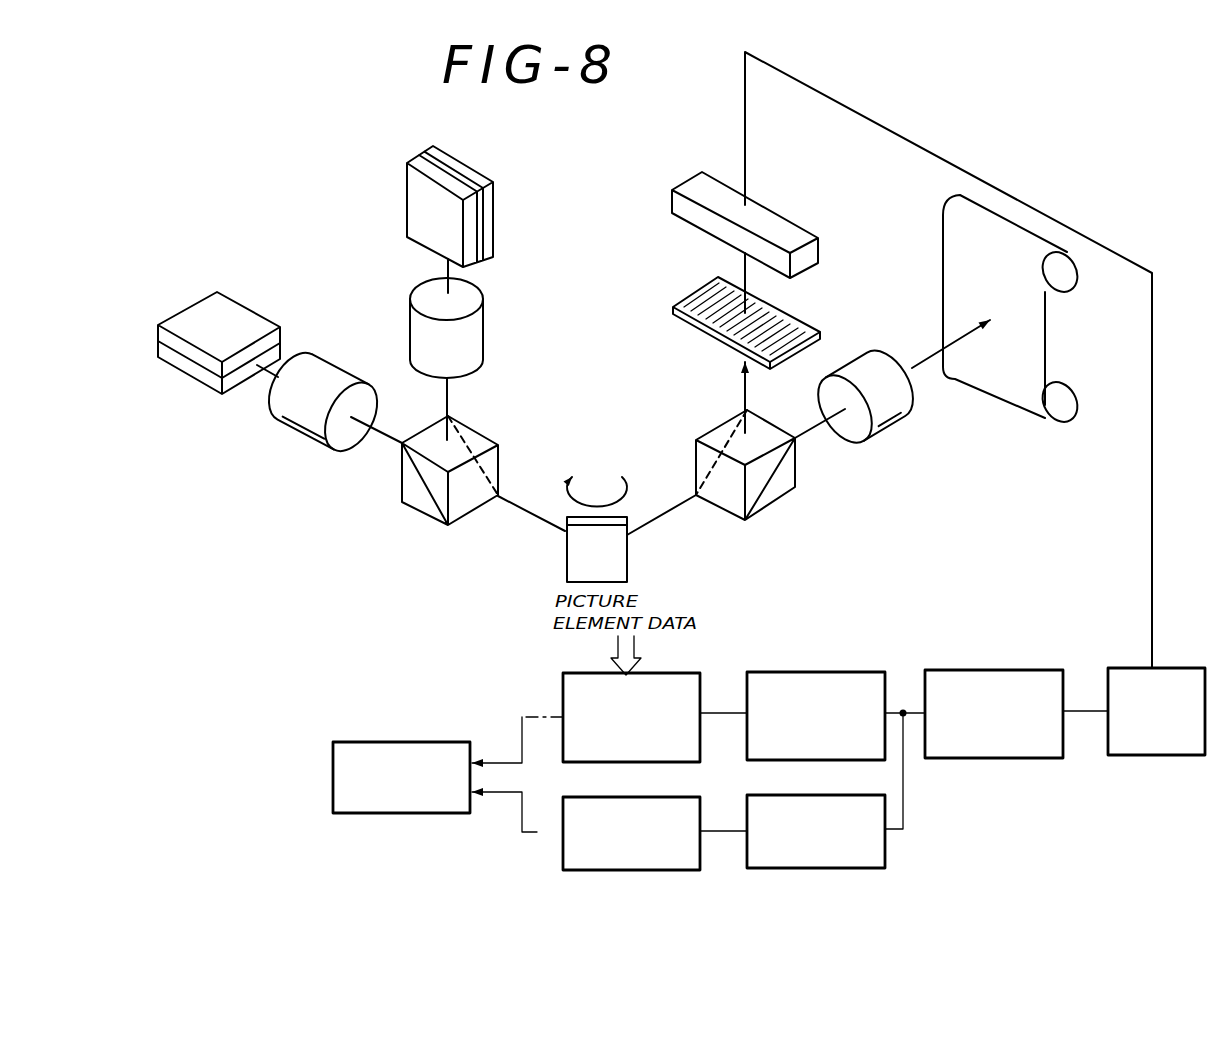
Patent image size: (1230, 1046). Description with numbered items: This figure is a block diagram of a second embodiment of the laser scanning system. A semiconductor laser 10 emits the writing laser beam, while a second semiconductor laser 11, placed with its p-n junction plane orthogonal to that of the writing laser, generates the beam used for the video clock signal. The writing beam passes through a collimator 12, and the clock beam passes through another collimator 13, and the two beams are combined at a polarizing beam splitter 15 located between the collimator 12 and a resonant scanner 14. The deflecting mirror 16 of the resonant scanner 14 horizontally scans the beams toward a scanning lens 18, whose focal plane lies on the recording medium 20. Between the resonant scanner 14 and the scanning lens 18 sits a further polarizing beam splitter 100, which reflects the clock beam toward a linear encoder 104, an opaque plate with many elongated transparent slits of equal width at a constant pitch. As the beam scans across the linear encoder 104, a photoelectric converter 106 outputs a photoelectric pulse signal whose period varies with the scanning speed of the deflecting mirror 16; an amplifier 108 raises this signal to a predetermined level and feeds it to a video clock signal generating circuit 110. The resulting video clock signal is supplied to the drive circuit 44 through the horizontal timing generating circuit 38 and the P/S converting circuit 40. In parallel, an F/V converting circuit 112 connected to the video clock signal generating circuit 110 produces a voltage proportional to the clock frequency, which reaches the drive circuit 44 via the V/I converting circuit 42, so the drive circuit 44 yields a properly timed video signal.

The semiconductor laser 10 is at (192, 378).
The semiconductor laser 11 is at (493, 217).
The collimator 12 is at (300, 435).
The collimator 13 is at (483, 330).
The resonant scanner 14 is at (563, 574).
The polarizing beam splitter 15 is at (475, 512).
The deflecting mirror 16 is at (615, 560).
The scanning lens 18 is at (872, 352).
The recording medium 20 is at (1047, 323).
The horizontal timing generating circuit 38 is at (782, 672).
The P/S converting circuit 40 is at (693, 673).
The V/I converting circuit 42 is at (638, 871).
The drive circuit 44 is at (392, 814).
The polarizing beam splitter 100 is at (780, 502).
The linear encoder 104 is at (687, 297).
The photoelectric converter 106 is at (818, 251).
The amplifier 108 is at (1147, 756).
The video clock signal generating circuit 110 is at (1008, 759).
The F/V converting circuit 112 is at (810, 869).